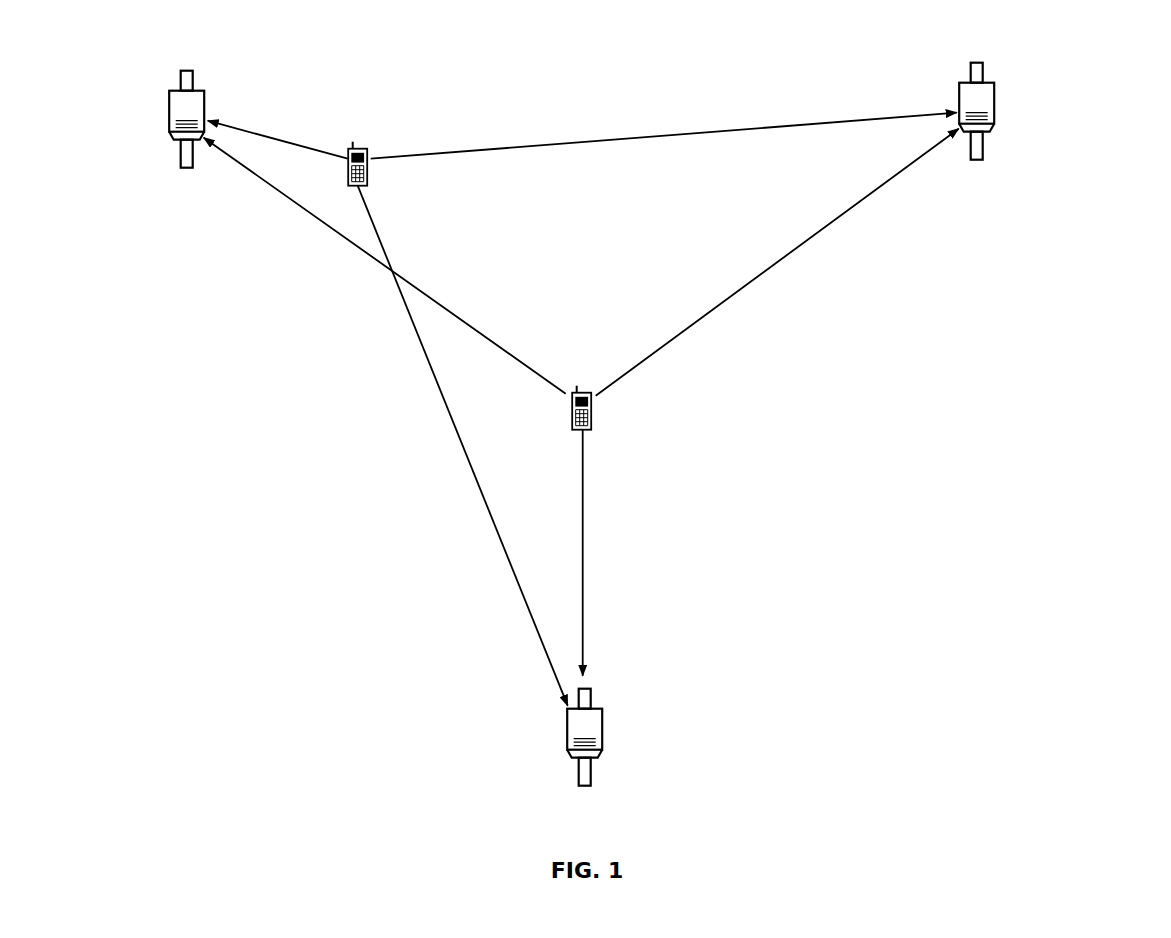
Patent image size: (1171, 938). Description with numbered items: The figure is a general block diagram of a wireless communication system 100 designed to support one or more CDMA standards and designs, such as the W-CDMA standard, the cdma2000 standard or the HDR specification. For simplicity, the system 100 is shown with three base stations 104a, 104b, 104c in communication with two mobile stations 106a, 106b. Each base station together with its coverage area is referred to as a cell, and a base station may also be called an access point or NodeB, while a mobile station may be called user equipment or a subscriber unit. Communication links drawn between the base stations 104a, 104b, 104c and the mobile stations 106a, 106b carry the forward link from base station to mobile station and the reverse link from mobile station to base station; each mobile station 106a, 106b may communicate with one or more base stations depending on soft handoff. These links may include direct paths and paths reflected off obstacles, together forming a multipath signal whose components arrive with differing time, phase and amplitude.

The wireless communication system 100 is at (1112, 72).
The base station 104a is at (196, 88).
The base station 104b is at (986, 80).
The base station 104c is at (594, 706).
The mobile station 106a is at (359, 146).
The mobile station 106b is at (575, 430).